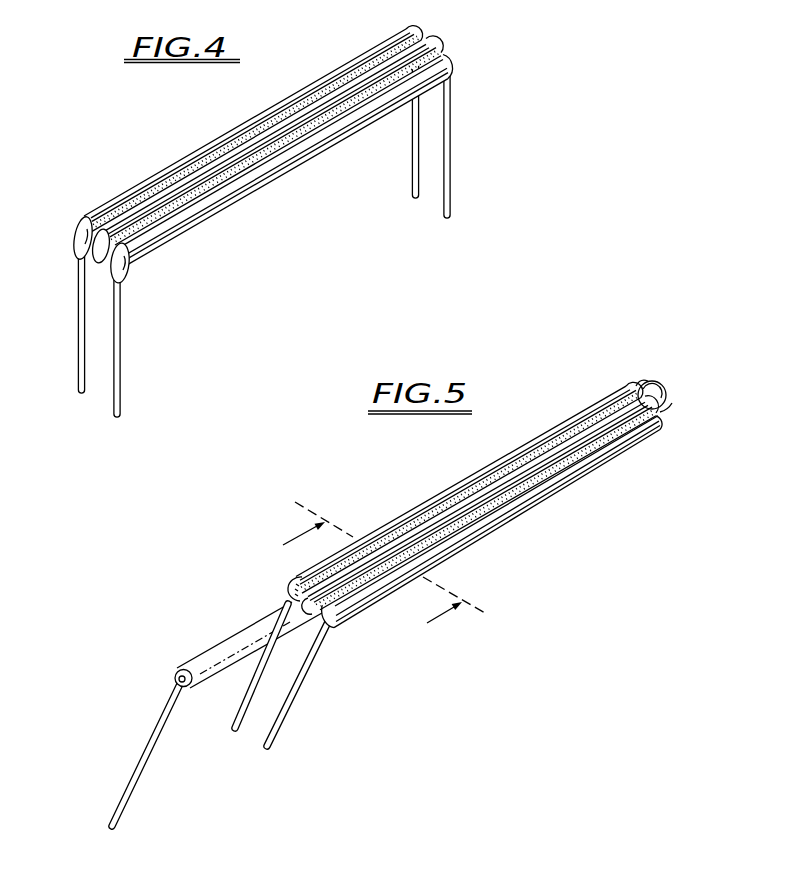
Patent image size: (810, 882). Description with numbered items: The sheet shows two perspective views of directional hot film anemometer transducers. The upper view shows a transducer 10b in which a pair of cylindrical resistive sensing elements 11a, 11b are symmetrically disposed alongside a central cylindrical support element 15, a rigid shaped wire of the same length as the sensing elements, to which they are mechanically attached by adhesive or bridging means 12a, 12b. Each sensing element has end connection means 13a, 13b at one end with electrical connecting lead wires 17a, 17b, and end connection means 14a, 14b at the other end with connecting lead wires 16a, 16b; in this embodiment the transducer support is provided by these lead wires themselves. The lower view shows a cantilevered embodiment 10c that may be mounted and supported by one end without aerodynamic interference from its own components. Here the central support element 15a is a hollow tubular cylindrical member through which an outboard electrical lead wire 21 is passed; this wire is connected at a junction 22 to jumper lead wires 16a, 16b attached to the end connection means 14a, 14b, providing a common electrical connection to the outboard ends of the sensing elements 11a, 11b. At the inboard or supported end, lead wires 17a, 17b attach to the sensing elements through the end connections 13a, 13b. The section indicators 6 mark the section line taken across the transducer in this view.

In FIG. 4, the directional hot film anemometer transducer 10b is at (139, 174).
In FIG. 5, the cantilevered embodiment 10c is at (387, 509).
In FIG. 4, the cylindrical sensing element 11a is at (211, 150).
In FIG. 5, the cylindrical sensing element 11a is at (437, 502).
In FIG. 4, the cylindrical sensing element 11b is at (355, 113).
In FIG. 5, the cylindrical sensing element 11b is at (505, 508).
In FIG. 4, the adhesive or bridging means 12a is at (263, 128).
In FIG. 5, the adhesive or bridging means 12a is at (497, 477).
In FIG. 4, the adhesive or bridging means 12b is at (287, 140).
In FIG. 5, the adhesive or bridging means 12b is at (550, 460).
In FIG. 4, the end connection means 13a is at (78, 235).
In FIG. 5, the end connection means 13a is at (290, 593).
In FIG. 4, the end connection means 13b is at (123, 273).
In FIG. 5, the end connection means 13b is at (333, 617).
In FIG. 4, the end connection means 14a is at (413, 32).
In FIG. 5, the end connection means 14a is at (627, 388).
In FIG. 4, the end connection means 14b is at (453, 72).
In FIG. 5, the end connection means 14b is at (660, 417).
In FIG. 4, the central cylindrical support element 15 is at (430, 40).
In FIG. 5, the central cylindrical support element 15 is at (480, 505).
In FIG. 5, the central support element 15a is at (200, 658).
In FIG. 4, the connecting lead wire 16a is at (412, 173).
In FIG. 5, the connecting lead wire 16a is at (643, 383).
In FIG. 4, the connecting lead wire 16b is at (452, 192).
In FIG. 5, the connecting lead wire 16b is at (668, 403).
In FIG. 4, the connecting lead wire 17a is at (80, 340).
In FIG. 5, the connecting lead wire 17a is at (242, 717).
In FIG. 4, the connecting lead wire 17b is at (120, 388).
In FIG. 5, the connecting lead wire 17b is at (290, 702).
In FIG. 5, the outboard electrical lead wire 21 is at (132, 783).
In FIG. 5, the junction 22 is at (657, 385).
In FIG. 5, the section line 6- 6 is at (371, 575).